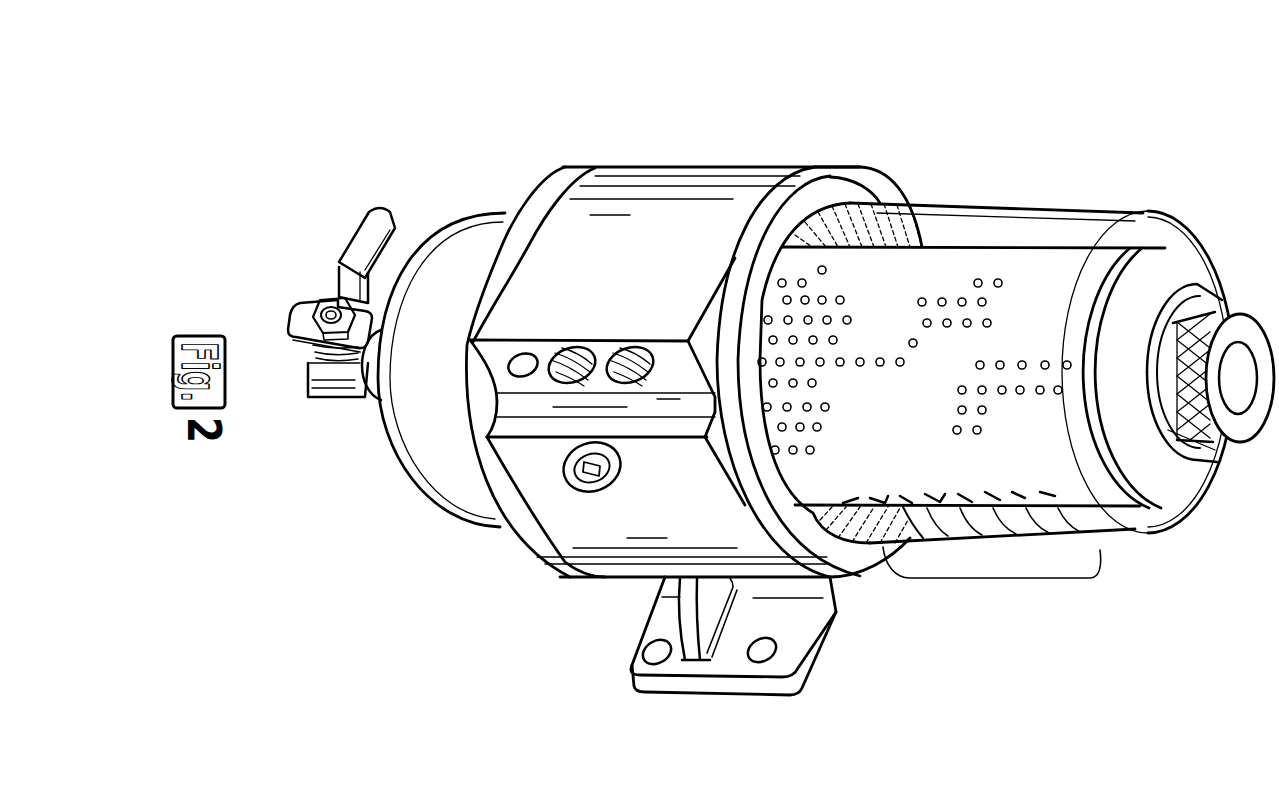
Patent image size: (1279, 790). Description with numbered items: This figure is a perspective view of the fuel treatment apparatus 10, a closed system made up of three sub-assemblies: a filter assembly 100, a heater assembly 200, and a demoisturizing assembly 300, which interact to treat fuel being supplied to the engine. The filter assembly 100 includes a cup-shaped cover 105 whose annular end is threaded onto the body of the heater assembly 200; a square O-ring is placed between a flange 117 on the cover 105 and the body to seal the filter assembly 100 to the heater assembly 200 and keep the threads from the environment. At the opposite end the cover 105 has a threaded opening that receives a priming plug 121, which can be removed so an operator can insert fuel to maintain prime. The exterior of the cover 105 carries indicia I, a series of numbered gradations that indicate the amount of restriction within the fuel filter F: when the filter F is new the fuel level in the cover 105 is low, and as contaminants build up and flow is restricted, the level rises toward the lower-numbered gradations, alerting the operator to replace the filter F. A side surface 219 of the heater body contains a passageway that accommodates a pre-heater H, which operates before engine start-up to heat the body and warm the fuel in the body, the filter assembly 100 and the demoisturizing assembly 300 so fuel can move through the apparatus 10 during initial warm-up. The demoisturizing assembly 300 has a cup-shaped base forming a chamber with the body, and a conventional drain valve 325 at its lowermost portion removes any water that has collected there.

The fuel treatment apparatus 10 is at (729, 126).
The heater assembly 200 is at (609, 208).
The demoisturizing assembly 300 is at (447, 272).
The drain valve 325 is at (330, 305).
The filter assembly 100 is at (915, 235).
The fuel filter F is at (1140, 283).
The priming plug 121 is at (1262, 440).
The cover 105 is at (1186, 523).
The flange 117 is at (845, 558).
The indicia I is at (990, 578).
The side surface 219 is at (620, 540).
The pre-heater H is at (588, 479).